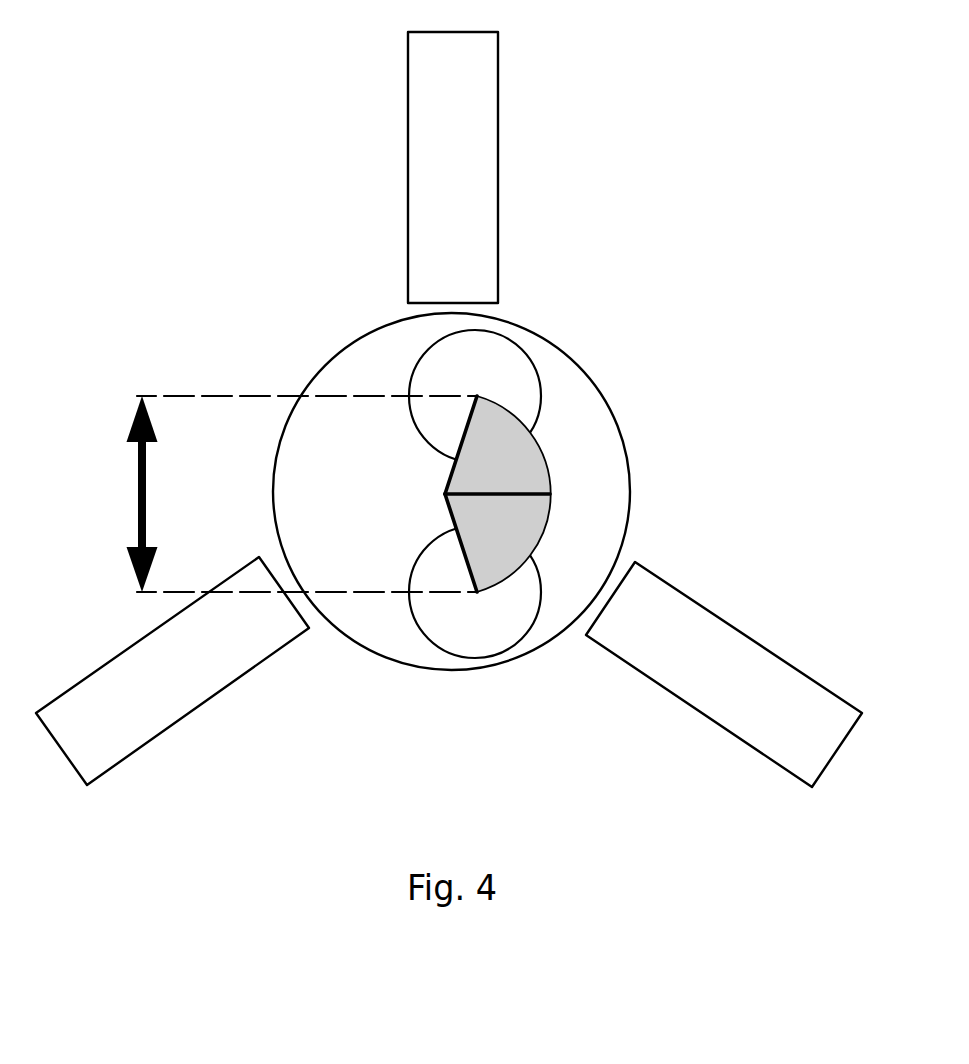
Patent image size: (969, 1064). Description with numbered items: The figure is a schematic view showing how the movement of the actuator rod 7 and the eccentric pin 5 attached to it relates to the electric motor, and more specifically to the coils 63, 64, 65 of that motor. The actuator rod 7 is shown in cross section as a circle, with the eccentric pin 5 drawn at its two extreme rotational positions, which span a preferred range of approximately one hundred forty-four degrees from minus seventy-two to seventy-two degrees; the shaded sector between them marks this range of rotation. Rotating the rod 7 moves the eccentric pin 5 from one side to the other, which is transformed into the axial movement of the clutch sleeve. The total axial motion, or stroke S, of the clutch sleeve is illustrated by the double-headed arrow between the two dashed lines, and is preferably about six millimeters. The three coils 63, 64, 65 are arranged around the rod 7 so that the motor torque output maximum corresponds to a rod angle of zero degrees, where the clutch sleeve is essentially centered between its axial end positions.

The actuator rod 7 is at (548, 343).
The eccentric pin 5 is at (541, 388).
The coil 63 is at (717, 615).
The coil 64 is at (193, 713).
The coil 65 is at (407, 180).
The stroke S is at (302, 494).